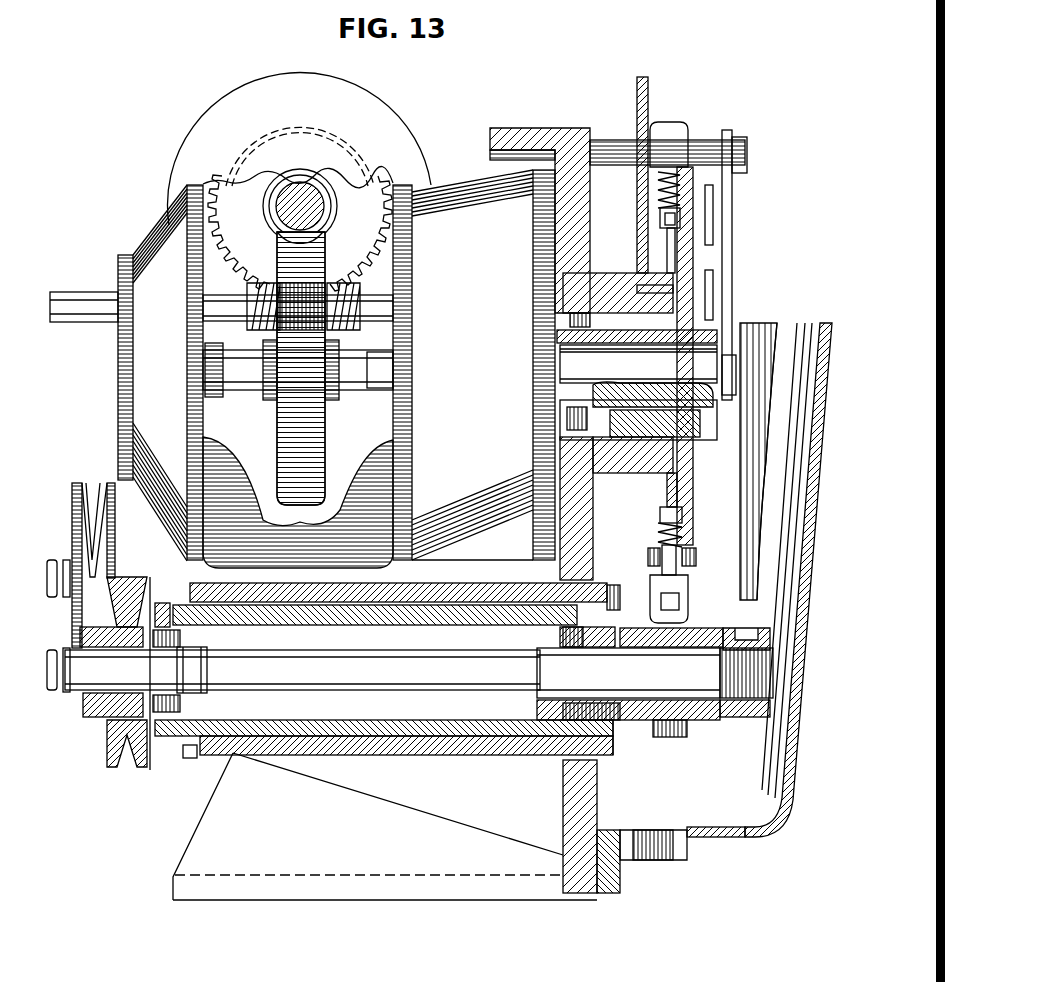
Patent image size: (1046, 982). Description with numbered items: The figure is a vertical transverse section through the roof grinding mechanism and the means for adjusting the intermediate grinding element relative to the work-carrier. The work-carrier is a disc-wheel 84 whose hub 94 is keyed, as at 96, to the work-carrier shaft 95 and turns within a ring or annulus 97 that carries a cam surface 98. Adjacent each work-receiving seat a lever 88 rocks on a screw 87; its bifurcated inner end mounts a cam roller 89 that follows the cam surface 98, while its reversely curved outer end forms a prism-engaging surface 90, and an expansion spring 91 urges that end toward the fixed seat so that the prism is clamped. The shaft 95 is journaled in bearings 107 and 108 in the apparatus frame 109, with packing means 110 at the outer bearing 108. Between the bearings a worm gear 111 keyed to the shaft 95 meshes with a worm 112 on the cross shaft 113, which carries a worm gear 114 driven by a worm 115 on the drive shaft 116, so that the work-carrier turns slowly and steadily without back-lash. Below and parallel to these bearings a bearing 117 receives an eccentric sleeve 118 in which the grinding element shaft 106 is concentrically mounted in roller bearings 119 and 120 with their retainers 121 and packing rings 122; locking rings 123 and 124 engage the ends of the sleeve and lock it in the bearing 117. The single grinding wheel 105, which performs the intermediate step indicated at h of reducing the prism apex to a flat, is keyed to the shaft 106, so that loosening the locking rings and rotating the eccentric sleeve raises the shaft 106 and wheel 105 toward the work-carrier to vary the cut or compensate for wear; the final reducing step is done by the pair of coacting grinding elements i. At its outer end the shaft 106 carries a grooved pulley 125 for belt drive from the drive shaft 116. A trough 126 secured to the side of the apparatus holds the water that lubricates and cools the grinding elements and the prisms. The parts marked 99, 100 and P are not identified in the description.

The disc-wheel 84 is at (693, 524).
The screw 87 is at (648, 558).
The lever 88 is at (676, 573).
The cam roller 89 is at (660, 518).
The prism-engaging surface 90 is at (680, 600).
The expansion spring 91 is at (658, 540).
The hub 94 is at (710, 328).
The work-carrier shaft 95 is at (378, 385).
The key 96 is at (668, 398).
The ring or annulus 97 is at (634, 465).
The cam surface 98 is at (667, 493).
The arm 99 is at (637, 103).
The plate 100 is at (733, 196).
The single grinding wheel 105 is at (678, 717).
The grinding element shaft 106 is at (403, 655).
The bearing 107 is at (215, 398).
The outer bearing 108 is at (565, 410).
The frame of the apparatus 109 is at (474, 365).
The packing means 110 is at (580, 313).
The worm gear 111 is at (326, 437).
The worm 112 is at (318, 201).
The cross shaft 113 is at (312, 219).
The worm gear 114 is at (245, 248).
The worm 115 is at (353, 300).
The drive shaft 116 is at (241, 318).
The bearing 117 is at (470, 757).
The eccentric sleeve 118 is at (390, 613).
The roller bearing 119 is at (207, 672).
The roller bearing 120 is at (520, 658).
The retainers 121 is at (543, 760).
The packing rings 122 is at (614, 618).
The locking ring 123 is at (190, 758).
The locking ring 124 is at (608, 754).
The grooved pulley 125 is at (108, 765).
The trough 126 is at (800, 332).
The pawl P is at (690, 618).
The single grinding wheel h is at (72, 698).
The pair of coacting grinding elements i is at (58, 626).